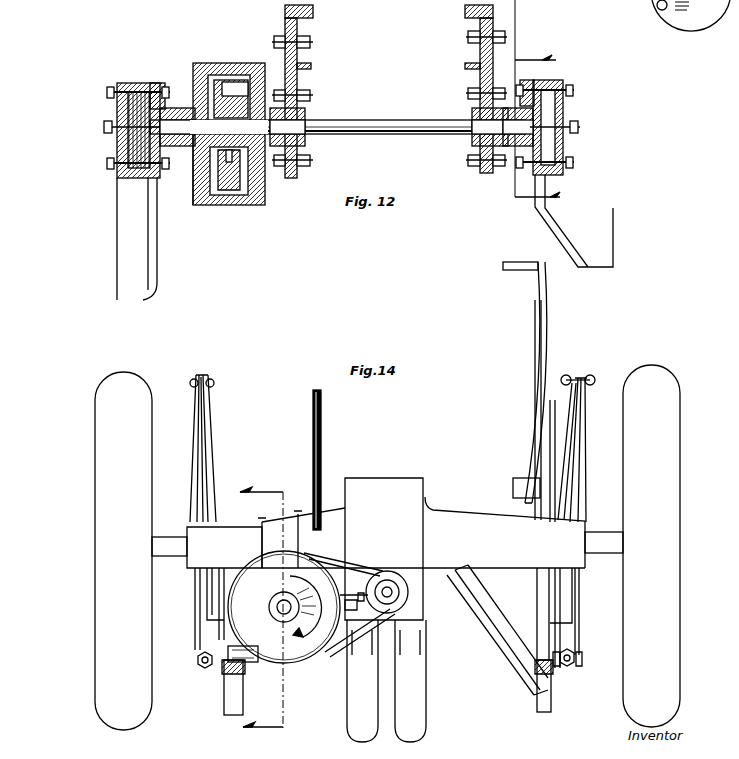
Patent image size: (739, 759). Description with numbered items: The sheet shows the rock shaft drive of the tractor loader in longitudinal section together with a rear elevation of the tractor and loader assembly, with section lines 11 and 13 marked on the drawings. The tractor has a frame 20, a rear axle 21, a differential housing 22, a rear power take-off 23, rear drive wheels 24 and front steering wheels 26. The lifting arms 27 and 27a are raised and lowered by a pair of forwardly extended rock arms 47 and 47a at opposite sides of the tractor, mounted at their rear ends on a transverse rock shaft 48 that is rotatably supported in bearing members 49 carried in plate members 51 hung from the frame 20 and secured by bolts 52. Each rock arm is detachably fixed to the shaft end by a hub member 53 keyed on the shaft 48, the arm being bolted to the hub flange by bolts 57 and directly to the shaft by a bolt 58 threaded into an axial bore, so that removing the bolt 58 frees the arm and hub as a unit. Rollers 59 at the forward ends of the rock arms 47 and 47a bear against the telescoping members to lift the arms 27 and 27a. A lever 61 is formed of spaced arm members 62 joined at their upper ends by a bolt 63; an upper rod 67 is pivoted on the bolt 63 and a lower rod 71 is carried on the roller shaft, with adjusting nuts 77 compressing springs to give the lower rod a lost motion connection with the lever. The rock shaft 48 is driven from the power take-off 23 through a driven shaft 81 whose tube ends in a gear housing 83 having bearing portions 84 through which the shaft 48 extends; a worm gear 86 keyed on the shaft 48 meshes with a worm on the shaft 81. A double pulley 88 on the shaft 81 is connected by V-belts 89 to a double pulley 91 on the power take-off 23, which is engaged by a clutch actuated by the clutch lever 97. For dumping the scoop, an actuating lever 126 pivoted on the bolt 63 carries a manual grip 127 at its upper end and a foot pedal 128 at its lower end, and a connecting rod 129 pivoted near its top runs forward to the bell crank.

In FIG. 14, the section line 11 is at (263, 615).
In FIG. 12, the section line 13 is at (534, 110).
In FIG. 12, the frame 20 is at (478, 22).
In FIG. 14, the rear axle 21 is at (628, 532).
In FIG. 14, the differential housing 22 is at (398, 478).
In FIG. 14, the rear power take-off 23 is at (405, 592).
In FIG. 14, the rear drive wheels 24 is at (676, 479).
In FIG. 14, the front steering wheels 26 is at (410, 738).
In FIG. 14, the lifting arm 27 is at (537, 590).
In FIG. 14, the lifting arm 27a is at (222, 640).
In FIG. 12, the rock arm 47 is at (613, 215).
In FIG. 14, the rock arm 47 is at (486, 625).
In FIG. 12, the rock arm 47a is at (120, 200).
In FIG. 14, the rock arm 47a is at (258, 677).
In FIG. 12, the rock shaft 48 is at (370, 120).
In FIG. 12, the bearing members 49 is at (303, 115).
In FIG. 12, the plate members 51 is at (482, 77).
In FIG. 12, the bolts 52 is at (468, 40).
In FIG. 12, the hub member 53 is at (176, 108).
In FIG. 12, the bolts 57 is at (110, 96).
In FIG. 12, the bolt 58 is at (104, 128).
In FIG. 14, the rollers 59 is at (224, 683).
In FIG. 14, the lever 61 is at (216, 460).
In FIG. 14, the arm members 62 is at (560, 470).
In FIG. 14, the bolt 63 is at (587, 376).
In FIG. 14, the upper rod 67 is at (575, 483).
In FIG. 14, the lower rod 71 is at (575, 652).
In FIG. 14, the adjusting nuts 77 is at (572, 663).
In FIG. 12, the driven shaft 81 is at (229, 192).
In FIG. 12, the gear housing 83 is at (213, 63).
In FIG. 12, the bearing portions 84 is at (193, 150).
In FIG. 12, the worm gear 86 is at (237, 76).
In FIG. 14, the double pulley 88 is at (330, 595).
In FIG. 14, the V-belts 89 is at (381, 577).
In FIG. 14, the double pulley 91 is at (392, 588).
In FIG. 14, the clutch lever 97 is at (322, 422).
In FIG. 14, the actuating lever 126 is at (560, 333).
In FIG. 14, the manual grip 127 is at (508, 272).
In FIG. 14, the foot pedal 128 is at (512, 487).
In FIG. 14, the connecting rod 129 is at (535, 356).